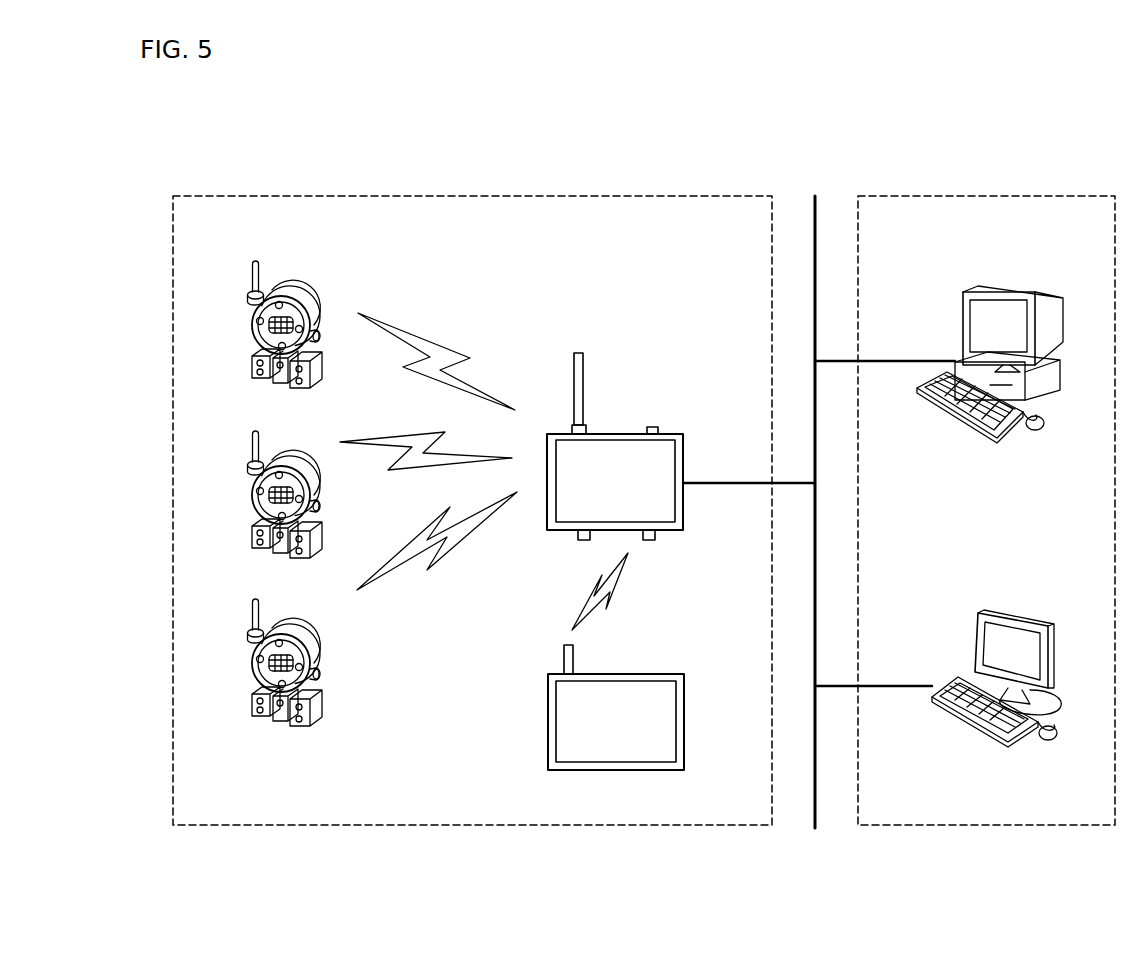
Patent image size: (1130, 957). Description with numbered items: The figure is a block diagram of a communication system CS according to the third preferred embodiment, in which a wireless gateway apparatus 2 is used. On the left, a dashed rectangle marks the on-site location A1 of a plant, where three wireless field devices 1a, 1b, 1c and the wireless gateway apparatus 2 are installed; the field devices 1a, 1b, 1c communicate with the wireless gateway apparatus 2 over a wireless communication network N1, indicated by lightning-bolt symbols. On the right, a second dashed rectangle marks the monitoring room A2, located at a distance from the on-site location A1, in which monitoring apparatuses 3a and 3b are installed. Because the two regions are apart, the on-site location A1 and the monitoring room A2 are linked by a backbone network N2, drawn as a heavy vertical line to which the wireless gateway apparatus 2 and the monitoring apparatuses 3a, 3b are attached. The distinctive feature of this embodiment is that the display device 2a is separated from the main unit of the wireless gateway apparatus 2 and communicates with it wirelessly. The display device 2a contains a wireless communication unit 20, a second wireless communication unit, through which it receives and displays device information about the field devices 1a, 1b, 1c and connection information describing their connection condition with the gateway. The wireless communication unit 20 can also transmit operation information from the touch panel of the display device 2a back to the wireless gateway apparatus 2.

The wireless field device 1a is at (252, 371).
The wireless field device 1b is at (252, 541).
The wireless field device 1c is at (252, 711).
The wireless gateway apparatus 2 is at (630, 430).
The wireless communication unit 20 is at (575, 656).
The display device 2a is at (646, 703).
The monitoring apparatus 3a is at (1030, 292).
The monitoring apparatus 3b is at (1028, 620).
The wireless communication network N1 is at (457, 334).
The backbone network N2 is at (818, 208).
The on-site location A1 is at (346, 828).
The monitoring room A2 is at (948, 828).
The communication system CS is at (987, 146).